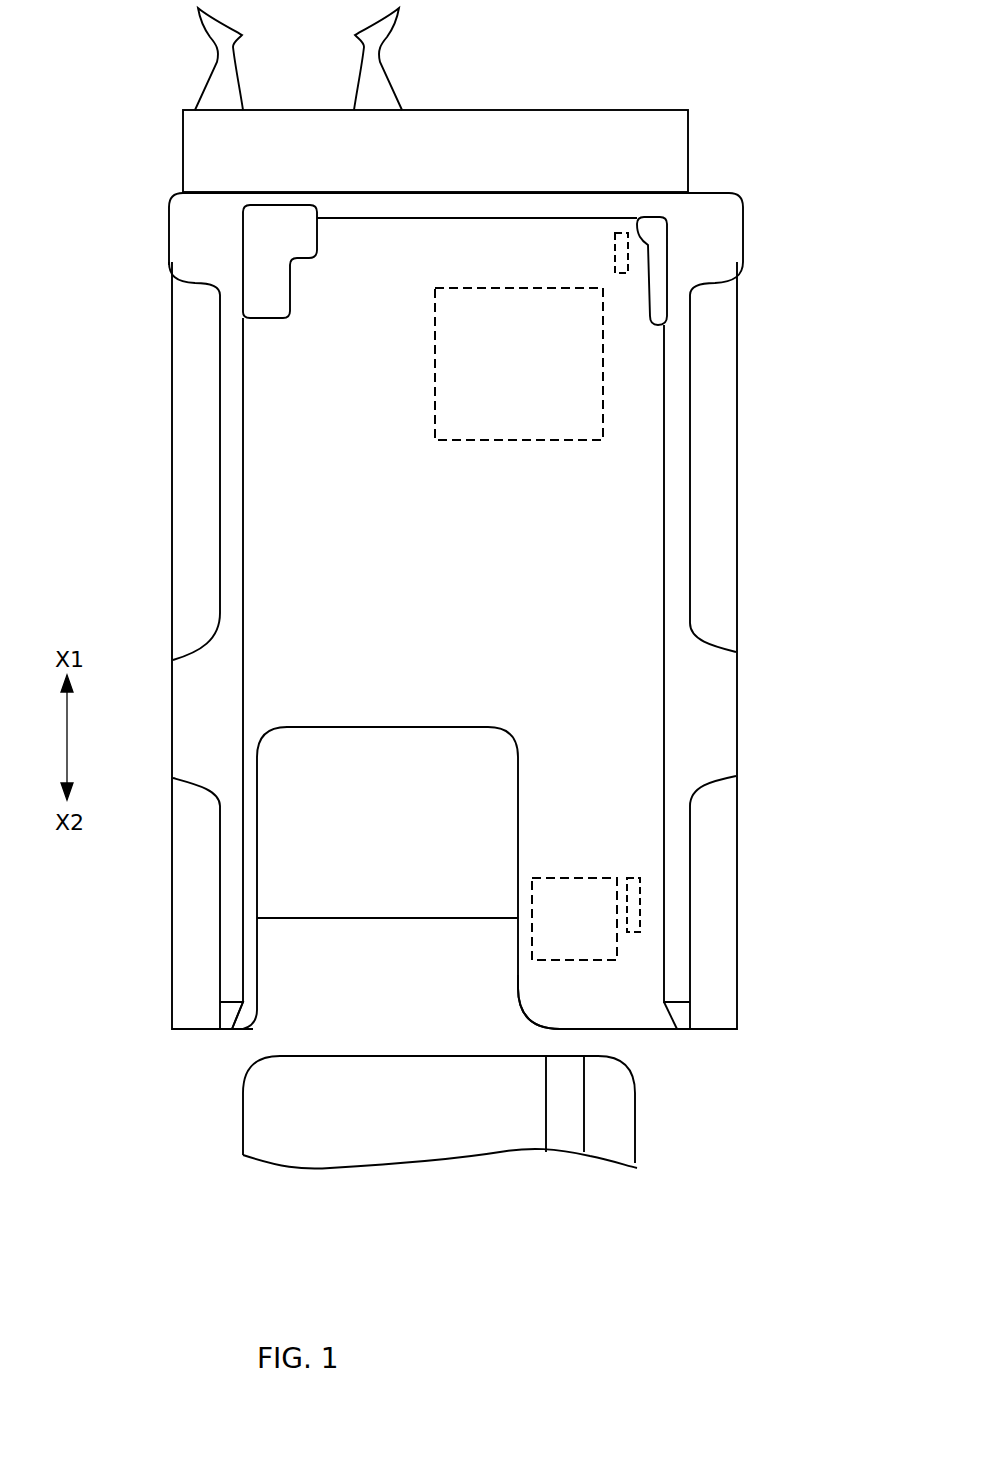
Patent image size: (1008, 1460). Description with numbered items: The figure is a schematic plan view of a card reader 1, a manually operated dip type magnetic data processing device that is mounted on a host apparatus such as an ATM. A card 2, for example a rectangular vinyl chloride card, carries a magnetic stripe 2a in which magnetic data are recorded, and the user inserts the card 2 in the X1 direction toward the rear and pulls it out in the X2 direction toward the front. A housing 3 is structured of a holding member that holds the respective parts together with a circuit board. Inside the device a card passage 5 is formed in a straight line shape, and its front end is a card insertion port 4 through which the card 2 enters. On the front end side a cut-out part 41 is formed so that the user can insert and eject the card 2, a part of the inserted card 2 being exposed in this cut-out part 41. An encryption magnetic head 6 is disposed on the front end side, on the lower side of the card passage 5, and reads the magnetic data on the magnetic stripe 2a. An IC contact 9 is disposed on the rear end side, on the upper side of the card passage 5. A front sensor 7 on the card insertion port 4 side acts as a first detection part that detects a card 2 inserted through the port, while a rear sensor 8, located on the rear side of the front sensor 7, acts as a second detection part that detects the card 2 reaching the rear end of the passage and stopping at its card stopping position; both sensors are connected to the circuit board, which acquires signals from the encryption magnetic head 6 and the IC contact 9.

The card reader 1 is at (753, 1015).
The card 2 is at (267, 1123).
The magnetic stripe 2a is at (566, 1127).
The housing 3 is at (603, 110).
The card insertion port 4 is at (378, 982).
The cut-out part 41 is at (540, 1006).
The card passage 5 is at (262, 940).
The encryption magnetic head 6 is at (598, 876).
The front sensor 7 is at (640, 903).
The rear sensor 8 is at (632, 255).
The IC contact 9 is at (603, 357).